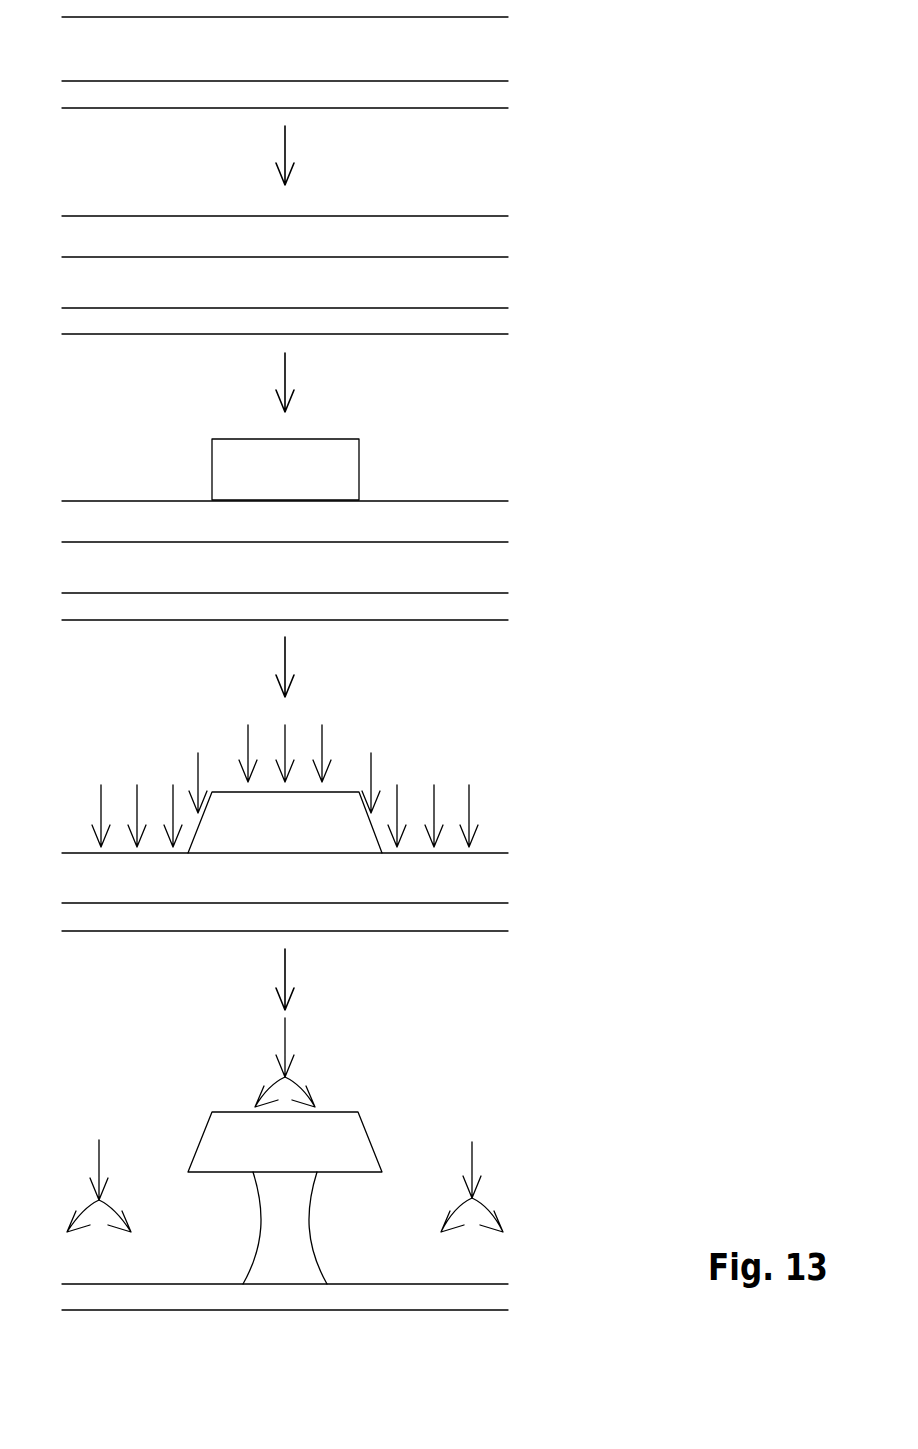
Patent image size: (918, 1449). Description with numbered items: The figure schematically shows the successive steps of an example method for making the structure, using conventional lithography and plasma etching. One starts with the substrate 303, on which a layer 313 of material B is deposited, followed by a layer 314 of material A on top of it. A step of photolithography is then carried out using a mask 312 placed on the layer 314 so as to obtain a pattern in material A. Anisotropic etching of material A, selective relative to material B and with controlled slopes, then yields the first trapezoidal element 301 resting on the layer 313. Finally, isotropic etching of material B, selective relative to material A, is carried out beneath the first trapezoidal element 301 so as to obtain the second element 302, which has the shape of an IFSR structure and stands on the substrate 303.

The first trapezoidal element 301 is at (272, 833).
The second element 302 is at (292, 1230).
The substrate 303 is at (480, 96).
The mask 312 is at (341, 466).
The layer of material B 313 is at (480, 52).
The layer of material A 314 is at (480, 240).